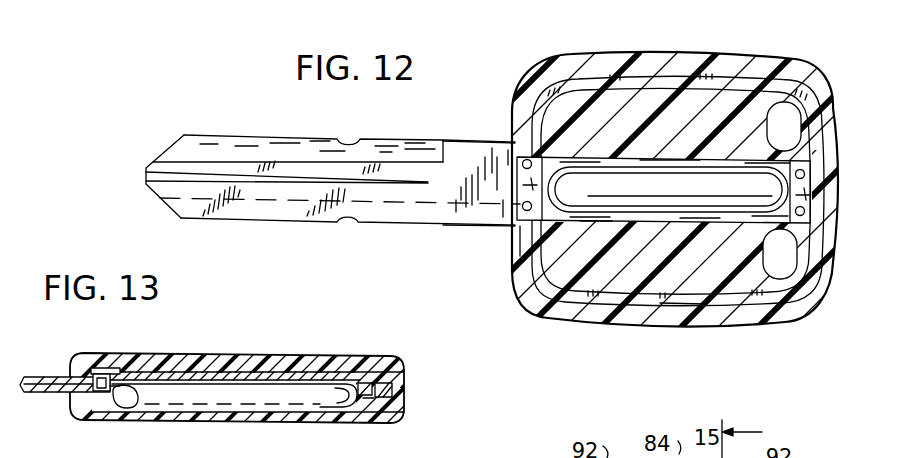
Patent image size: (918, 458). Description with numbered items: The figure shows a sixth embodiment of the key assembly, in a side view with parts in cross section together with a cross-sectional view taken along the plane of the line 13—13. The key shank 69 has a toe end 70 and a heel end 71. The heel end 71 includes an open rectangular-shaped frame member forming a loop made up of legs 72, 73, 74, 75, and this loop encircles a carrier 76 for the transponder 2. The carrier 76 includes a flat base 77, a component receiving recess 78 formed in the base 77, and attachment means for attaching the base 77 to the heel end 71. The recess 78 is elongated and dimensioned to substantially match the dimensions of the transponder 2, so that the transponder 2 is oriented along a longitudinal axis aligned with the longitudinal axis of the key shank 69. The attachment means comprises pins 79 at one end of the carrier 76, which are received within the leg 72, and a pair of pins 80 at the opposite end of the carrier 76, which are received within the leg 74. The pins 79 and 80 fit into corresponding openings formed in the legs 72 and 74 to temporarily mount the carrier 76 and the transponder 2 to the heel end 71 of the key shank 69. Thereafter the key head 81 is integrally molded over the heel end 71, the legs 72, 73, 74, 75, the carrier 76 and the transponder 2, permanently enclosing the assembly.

In FIG. 12, the transponder 2 is at (665, 192).
In FIG. 12, the line 13— 13 is at (438, 248).
In FIG. 12, the key shank 69 is at (293, 212).
In FIG. 12, the toe end 70 is at (145, 168).
In FIG. 12, the heel end 71 is at (500, 188).
In FIG. 13, the heel end 71 is at (52, 388).
In FIG. 12, the leg 72 is at (532, 262).
In FIG. 13, the leg 72 is at (128, 395).
In FIG. 12, the leg 73 is at (665, 78).
In FIG. 12, the leg 74 is at (813, 134).
In FIG. 13, the leg 74 is at (393, 387).
In FIG. 12, the leg 75 is at (682, 303).
In FIG. 12, the carrier 76 is at (595, 232).
In FIG. 12, the flat base 77 is at (634, 117).
In FIG. 13, the flat base 77 is at (193, 377).
In FIG. 12, the component receiving recess 78 is at (708, 175).
In FIG. 13, the component receiving recess 78 is at (207, 399).
In FIG. 12, the pins 79 is at (524, 201).
In FIG. 13, the pins 79 is at (104, 394).
In FIG. 13, the pair of pins 80 is at (372, 401).
In FIG. 12, the key head 81 is at (808, 306).
In FIG. 13, the key head 81 is at (308, 360).